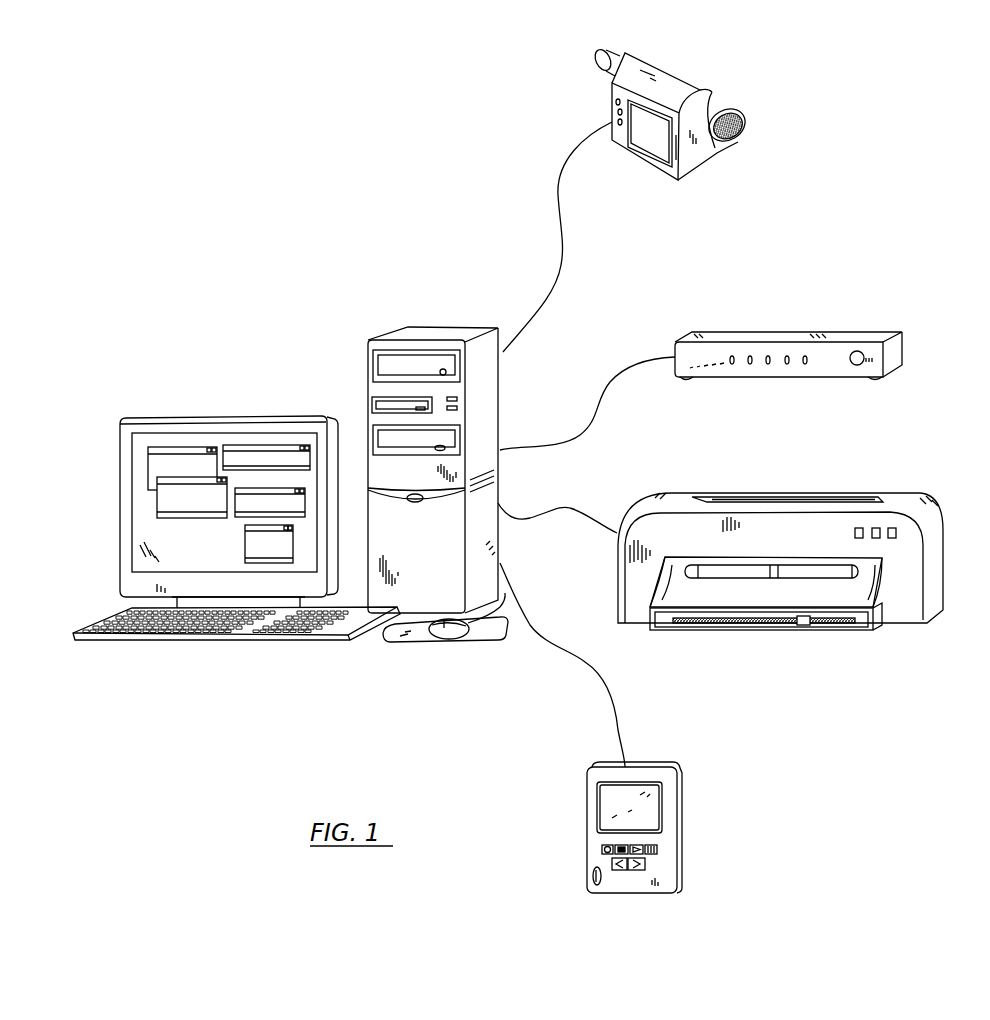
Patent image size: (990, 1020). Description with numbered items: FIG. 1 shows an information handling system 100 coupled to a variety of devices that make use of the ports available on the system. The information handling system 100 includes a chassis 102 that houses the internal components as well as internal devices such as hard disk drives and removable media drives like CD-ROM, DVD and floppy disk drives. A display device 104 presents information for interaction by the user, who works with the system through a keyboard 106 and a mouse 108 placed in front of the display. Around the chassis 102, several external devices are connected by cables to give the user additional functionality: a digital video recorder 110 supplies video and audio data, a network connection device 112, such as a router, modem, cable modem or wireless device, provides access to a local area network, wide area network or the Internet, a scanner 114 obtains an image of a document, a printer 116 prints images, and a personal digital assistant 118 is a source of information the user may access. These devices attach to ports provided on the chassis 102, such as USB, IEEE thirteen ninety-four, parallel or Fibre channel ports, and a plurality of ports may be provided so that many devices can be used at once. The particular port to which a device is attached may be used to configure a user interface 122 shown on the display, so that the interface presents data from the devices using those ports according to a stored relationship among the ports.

The information handling system 100 is at (331, 208).
The chassis 102 is at (413, 330).
The monitor 104 is at (205, 420).
The keyboard 106 is at (277, 637).
The mouse 108 is at (427, 642).
The digital video recorder 110 is at (708, 92).
The network connection device 112 is at (770, 332).
The scanner 114 is at (797, 492).
The printer 116 is at (823, 630).
The personal digital assistant 118 is at (678, 764).
The user interface 122 is at (188, 520).